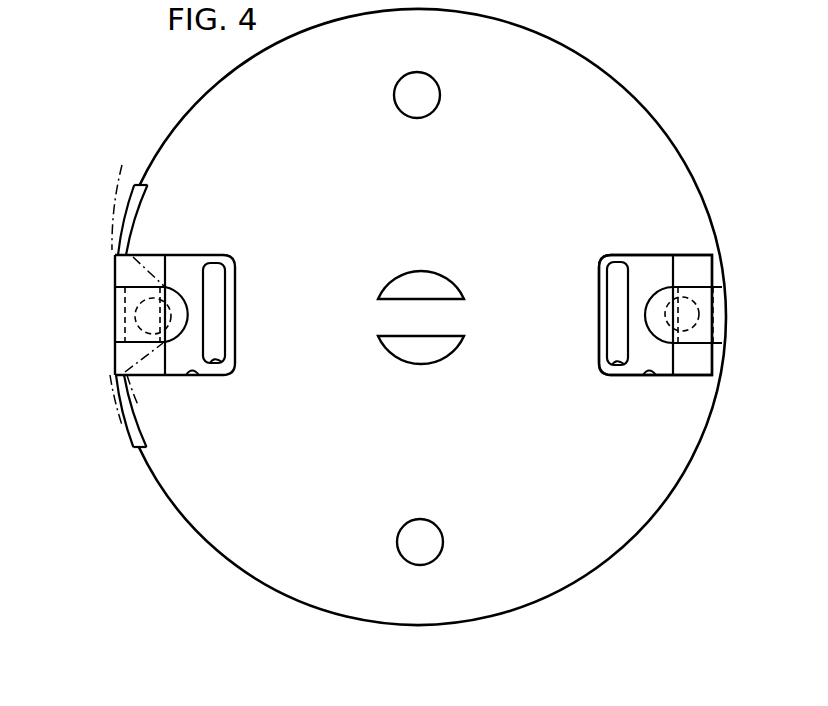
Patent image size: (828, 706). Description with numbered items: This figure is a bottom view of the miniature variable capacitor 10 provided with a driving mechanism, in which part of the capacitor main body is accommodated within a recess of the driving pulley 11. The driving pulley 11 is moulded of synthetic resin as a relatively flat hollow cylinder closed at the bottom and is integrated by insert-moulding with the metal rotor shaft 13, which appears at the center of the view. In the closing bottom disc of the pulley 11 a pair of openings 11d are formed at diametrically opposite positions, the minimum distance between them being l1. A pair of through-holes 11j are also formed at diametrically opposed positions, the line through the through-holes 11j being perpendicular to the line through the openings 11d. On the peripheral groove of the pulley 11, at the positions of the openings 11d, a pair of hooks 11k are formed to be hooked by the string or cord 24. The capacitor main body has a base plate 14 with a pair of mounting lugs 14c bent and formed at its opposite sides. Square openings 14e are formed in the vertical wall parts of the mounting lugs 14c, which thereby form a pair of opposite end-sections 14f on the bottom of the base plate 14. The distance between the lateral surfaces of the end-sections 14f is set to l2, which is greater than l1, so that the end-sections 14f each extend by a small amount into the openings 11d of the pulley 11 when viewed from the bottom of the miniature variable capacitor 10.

The miniature variable capacitor 10 is at (178, 94).
The driving pulley 11 is at (648, 111).
The through-holes 11j is at (435, 97).
The hooks 11k is at (142, 317).
The openings 11d is at (197, 378).
The rotor shaft 13 is at (421, 364).
The base plate 14 is at (640, 258).
The mounting lugs 14c is at (190, 254).
The square openings 14e is at (226, 359).
The opposite end-sections 14f is at (234, 302).
The string or cord 24 is at (123, 183).
The minimum distance between the openings l1 is at (599, 254).
The distance between the opposite sections l2 is at (608, 254).